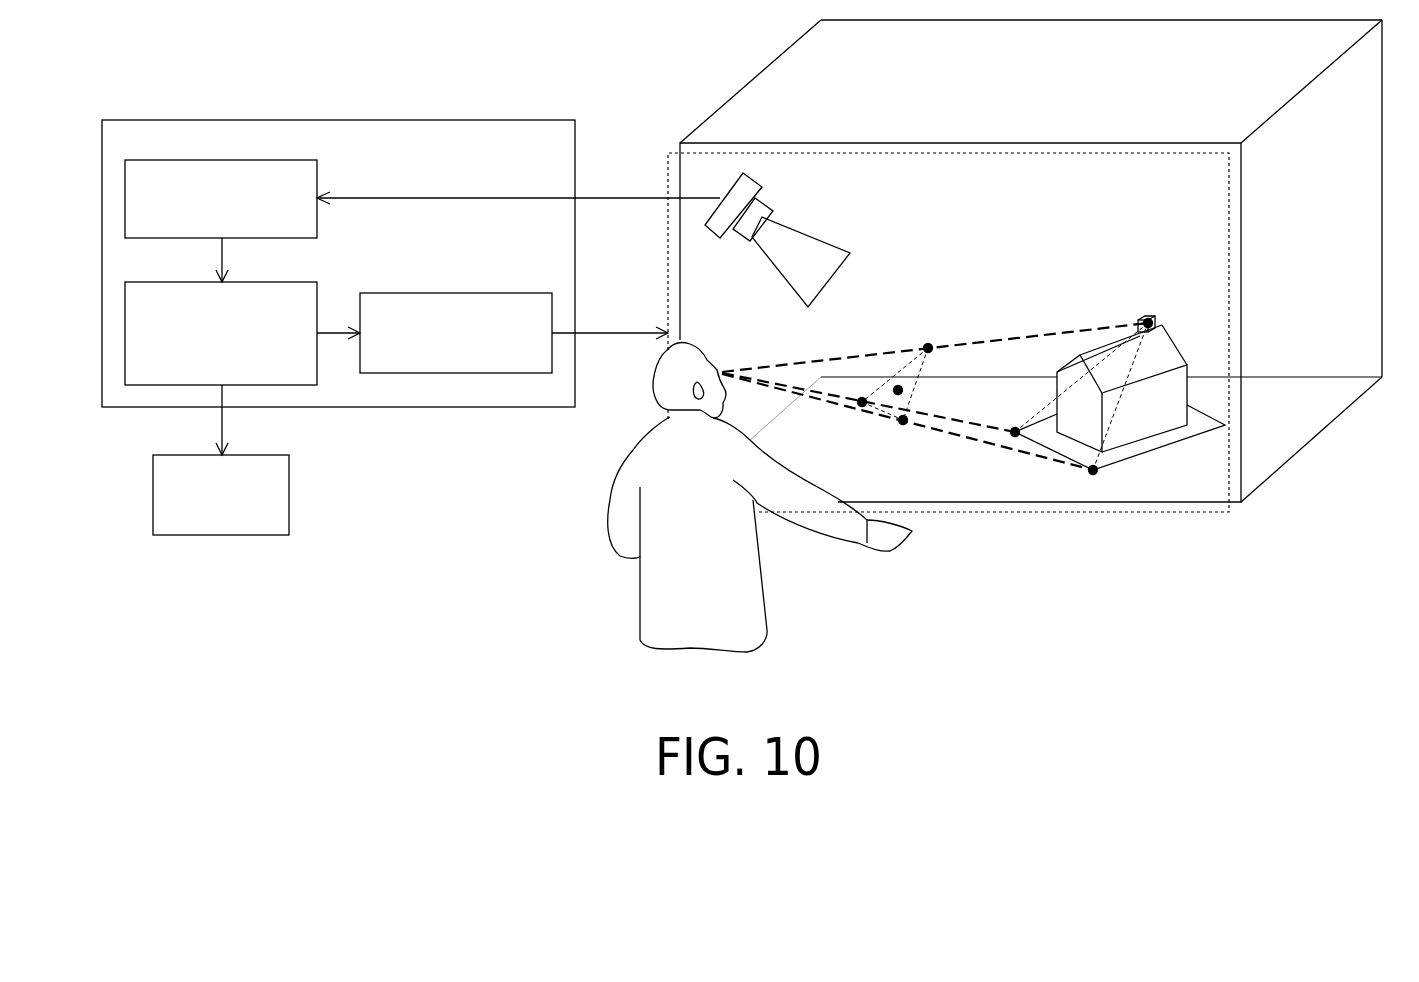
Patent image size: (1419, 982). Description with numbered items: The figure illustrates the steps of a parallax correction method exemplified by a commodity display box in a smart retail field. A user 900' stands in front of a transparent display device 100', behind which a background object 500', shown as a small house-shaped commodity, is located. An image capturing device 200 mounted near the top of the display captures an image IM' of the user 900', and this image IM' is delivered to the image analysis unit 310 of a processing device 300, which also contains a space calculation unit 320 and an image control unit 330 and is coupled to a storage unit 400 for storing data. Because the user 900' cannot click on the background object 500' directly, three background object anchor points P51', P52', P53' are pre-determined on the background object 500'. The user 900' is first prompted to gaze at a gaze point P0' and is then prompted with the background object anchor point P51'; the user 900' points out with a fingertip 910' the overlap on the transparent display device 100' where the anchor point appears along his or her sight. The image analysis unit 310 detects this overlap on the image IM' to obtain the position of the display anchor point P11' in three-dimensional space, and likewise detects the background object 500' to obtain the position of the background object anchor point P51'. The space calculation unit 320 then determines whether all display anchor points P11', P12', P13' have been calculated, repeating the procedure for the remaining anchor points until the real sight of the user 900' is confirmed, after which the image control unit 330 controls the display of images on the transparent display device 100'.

The transparent display device 100' is at (1025, 266).
The image capturing device 200 is at (745, 183).
The processing device 300 is at (563, 153).
The image analysis unit 310 is at (267, 228).
The space calculation unit 320 is at (243, 377).
The image control unit 330 is at (503, 363).
The storage unit 400 is at (285, 525).
The background object 500' is at (1210, 393).
The user 900' is at (747, 497).
The fingertip 910' is at (899, 560).
The image IM' is at (518, 184).
The gaze point P0' is at (901, 302).
The display anchor point P11' is at (935, 316).
The display anchor point P12' is at (927, 456).
The display anchor point P13' is at (838, 438).
The background object anchor point P51' is at (1158, 286).
The background object anchor point P52' is at (1121, 519).
The background object anchor point P53' is at (1015, 502).